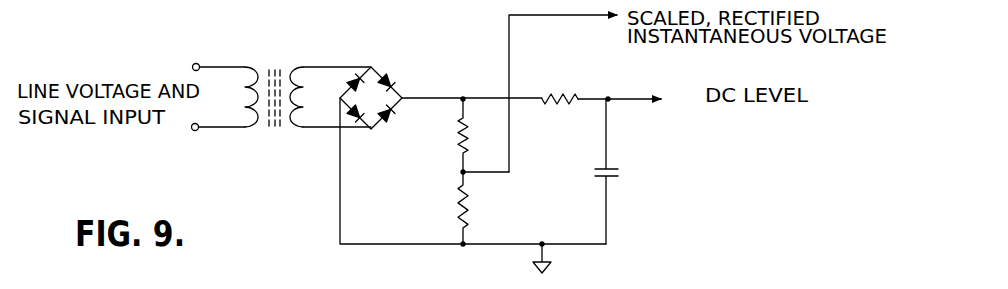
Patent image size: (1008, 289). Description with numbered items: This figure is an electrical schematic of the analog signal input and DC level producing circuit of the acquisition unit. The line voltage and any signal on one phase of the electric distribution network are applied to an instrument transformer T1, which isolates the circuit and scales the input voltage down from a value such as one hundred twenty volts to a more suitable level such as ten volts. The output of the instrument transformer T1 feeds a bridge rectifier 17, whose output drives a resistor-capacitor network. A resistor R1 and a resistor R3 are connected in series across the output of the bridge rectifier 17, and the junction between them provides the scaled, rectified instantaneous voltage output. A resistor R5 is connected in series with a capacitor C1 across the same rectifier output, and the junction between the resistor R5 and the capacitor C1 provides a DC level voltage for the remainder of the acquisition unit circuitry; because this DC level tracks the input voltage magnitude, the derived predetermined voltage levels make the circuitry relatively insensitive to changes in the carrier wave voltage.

The instrument transformer T1 is at (279, 52).
The bridge rectifier 17 is at (388, 58).
The resistor R1 is at (483, 118).
The resistor R3 is at (471, 207).
The resistor R5 is at (572, 100).
The capacitor C1 is at (617, 168).